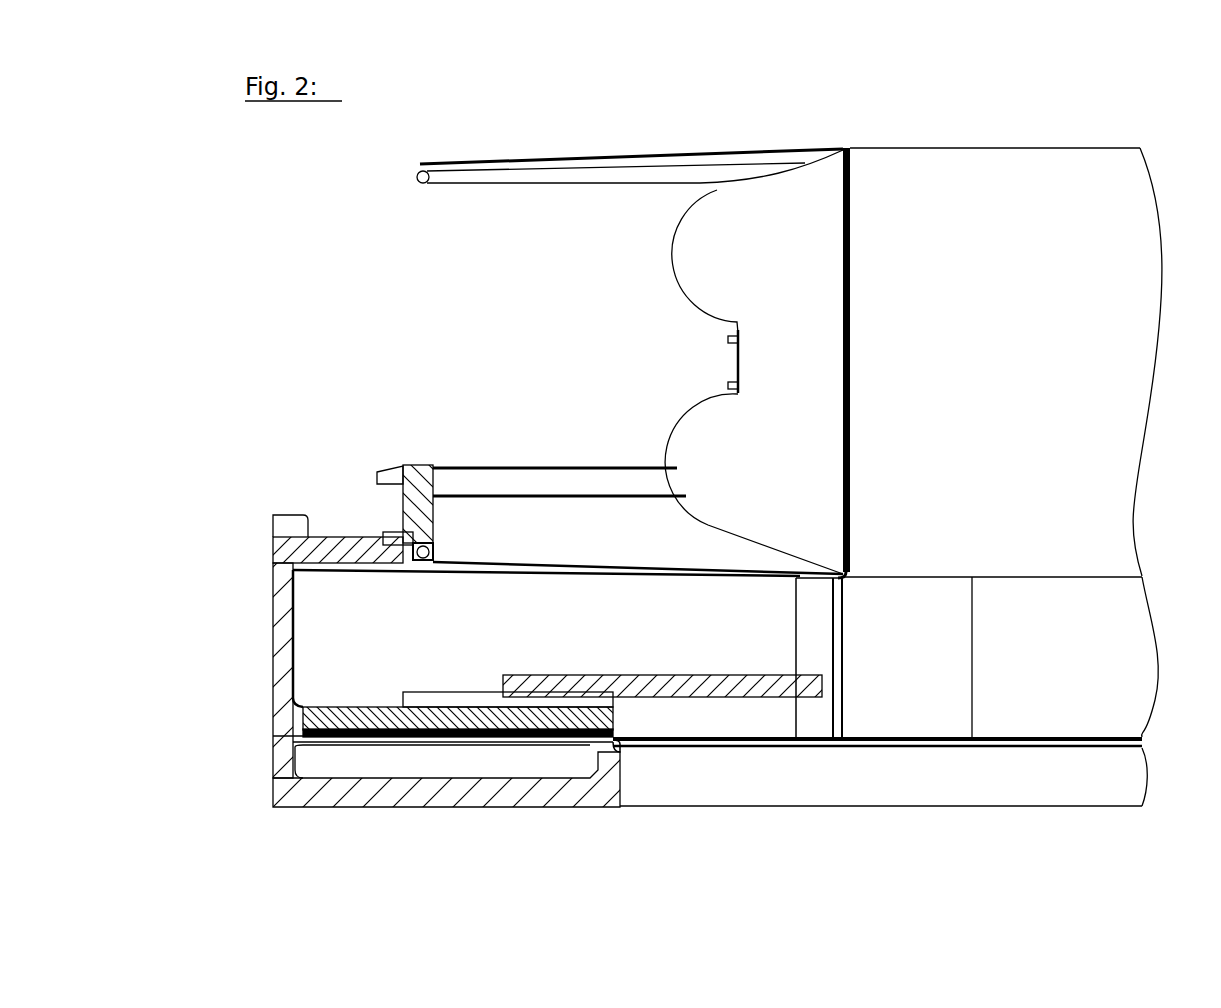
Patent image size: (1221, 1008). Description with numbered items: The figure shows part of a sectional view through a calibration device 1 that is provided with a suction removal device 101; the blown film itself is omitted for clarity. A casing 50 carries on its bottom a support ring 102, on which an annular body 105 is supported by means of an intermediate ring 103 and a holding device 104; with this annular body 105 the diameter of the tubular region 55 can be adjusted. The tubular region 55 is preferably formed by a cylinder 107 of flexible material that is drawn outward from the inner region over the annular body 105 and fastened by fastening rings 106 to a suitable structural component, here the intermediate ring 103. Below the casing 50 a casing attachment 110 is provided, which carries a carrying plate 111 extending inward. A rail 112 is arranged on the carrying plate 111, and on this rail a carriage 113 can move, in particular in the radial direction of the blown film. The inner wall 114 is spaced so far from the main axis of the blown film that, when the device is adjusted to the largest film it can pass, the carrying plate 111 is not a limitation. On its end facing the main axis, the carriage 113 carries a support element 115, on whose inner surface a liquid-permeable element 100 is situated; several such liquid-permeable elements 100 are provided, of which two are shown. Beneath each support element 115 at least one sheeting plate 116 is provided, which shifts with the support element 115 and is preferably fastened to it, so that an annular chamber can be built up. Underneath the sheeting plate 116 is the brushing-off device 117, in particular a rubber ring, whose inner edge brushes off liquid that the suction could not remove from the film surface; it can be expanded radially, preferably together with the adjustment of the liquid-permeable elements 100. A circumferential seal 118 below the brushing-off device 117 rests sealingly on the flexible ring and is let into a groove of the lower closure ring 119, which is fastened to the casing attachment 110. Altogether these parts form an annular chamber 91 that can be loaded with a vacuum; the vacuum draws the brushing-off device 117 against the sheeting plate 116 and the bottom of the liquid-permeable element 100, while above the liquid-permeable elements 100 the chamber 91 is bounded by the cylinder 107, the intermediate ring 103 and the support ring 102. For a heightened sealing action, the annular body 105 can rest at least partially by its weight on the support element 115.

The calibration device 1 is at (372, 296).
The casing 50 is at (283, 518).
The tubular region 55 is at (1034, 290).
The annular chamber 91 is at (652, 592).
The liquid-permeable element 100 is at (843, 592).
The suction removal device 101 is at (266, 620).
The support ring 102 is at (337, 538).
The intermediate ring 103 is at (412, 468).
The holding device 104 is at (577, 482).
The annular body 105 is at (810, 290).
The fastening ring 106 is at (427, 168).
The cylinder 107 is at (887, 147).
The casing attachment 110 is at (294, 620).
The carrying plate 111 is at (365, 712).
The rail 112 is at (448, 696).
The carriage 113 is at (540, 675).
The inner wall 114 is at (616, 715).
The support element 115 is at (808, 620).
The sheeting plate 116 is at (768, 723).
The brushing-off device 117 is at (772, 749).
The circumferential seal 118 is at (623, 748).
The lower closure ring 119 is at (491, 796).